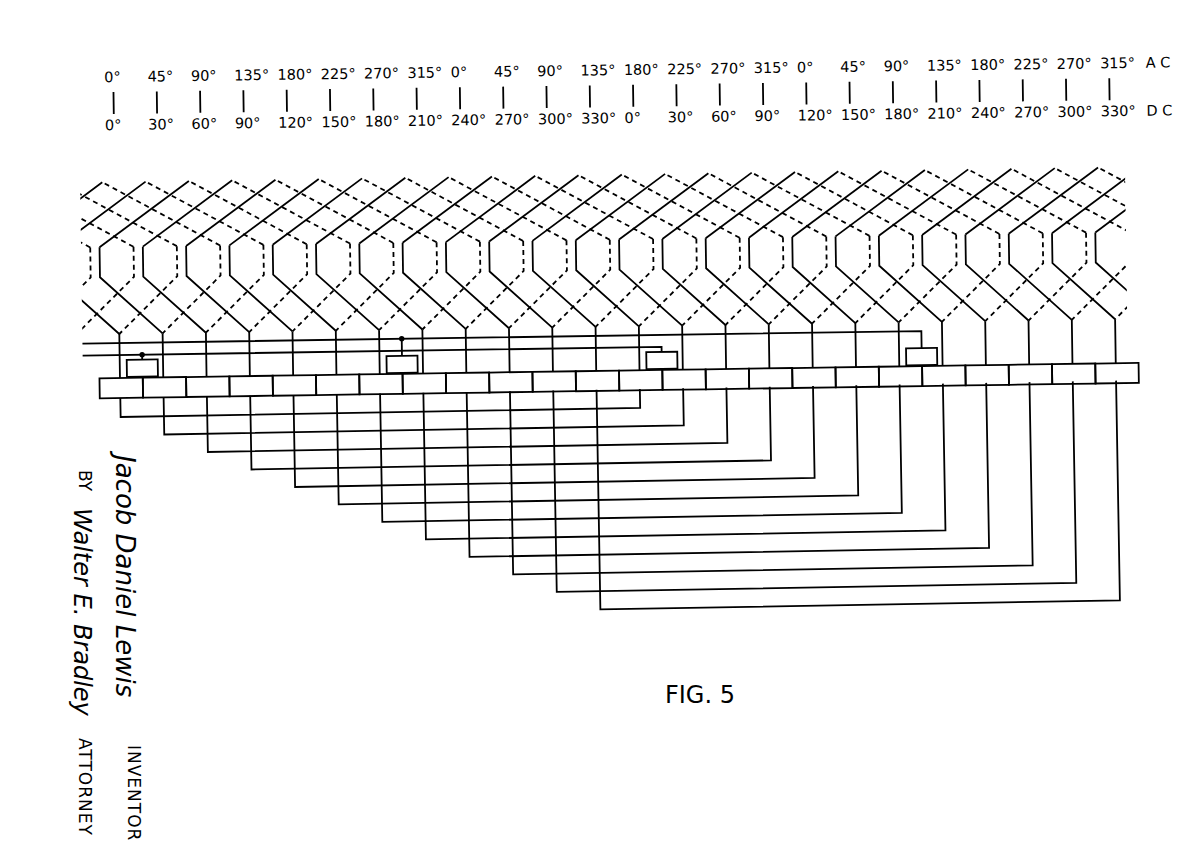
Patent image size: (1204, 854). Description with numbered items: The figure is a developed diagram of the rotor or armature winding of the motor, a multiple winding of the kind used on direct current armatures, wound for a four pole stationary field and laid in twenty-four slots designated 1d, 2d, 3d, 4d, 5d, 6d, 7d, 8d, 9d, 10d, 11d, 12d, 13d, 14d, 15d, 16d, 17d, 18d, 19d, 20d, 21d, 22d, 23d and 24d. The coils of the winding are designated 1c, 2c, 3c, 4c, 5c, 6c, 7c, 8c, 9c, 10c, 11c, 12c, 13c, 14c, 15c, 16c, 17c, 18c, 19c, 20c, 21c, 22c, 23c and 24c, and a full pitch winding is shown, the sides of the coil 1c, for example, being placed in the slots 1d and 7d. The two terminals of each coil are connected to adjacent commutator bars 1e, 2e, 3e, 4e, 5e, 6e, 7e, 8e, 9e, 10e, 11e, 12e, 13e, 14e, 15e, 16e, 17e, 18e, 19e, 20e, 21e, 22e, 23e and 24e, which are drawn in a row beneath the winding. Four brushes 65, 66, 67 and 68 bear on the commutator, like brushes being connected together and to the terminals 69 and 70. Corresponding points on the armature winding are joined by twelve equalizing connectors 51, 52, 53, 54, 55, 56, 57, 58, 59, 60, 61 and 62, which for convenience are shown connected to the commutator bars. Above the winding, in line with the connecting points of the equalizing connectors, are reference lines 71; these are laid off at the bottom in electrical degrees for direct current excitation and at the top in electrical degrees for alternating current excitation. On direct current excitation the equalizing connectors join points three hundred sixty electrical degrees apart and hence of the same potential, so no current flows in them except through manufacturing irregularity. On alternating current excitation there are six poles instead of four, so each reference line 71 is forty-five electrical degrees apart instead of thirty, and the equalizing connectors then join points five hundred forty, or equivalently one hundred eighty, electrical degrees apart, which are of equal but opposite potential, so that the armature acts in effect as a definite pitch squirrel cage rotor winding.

The armature coil 1c is at (246, 204).
The armature coil 2c is at (289, 203).
The armature coil 3c is at (332, 202).
The armature coil 4c is at (375, 202).
The armature coil 5c is at (419, 201).
The armature coil 6c is at (462, 200).
The armature coil 7c is at (505, 200).
The armature coil 8c is at (549, 199).
The armature coil 9c is at (592, 198).
The armature coil 10c is at (635, 198).
The armature coil 11c is at (679, 197).
The armature coil 12c is at (722, 197).
The armature coil 13c is at (765, 196).
The armature coil 14c is at (808, 195).
The armature coil 15c is at (852, 195).
The armature coil 16c is at (895, 194).
The armature coil 17c is at (938, 193).
The armature coil 18c is at (982, 193).
The armature coil 19c is at (1025, 192).
The armature coil 20c is at (548, 200).
The armature coil 21c is at (592, 199).
The armature coil 22c is at (622, 198).
The armature coil 23c is at (665, 197).
The armature coil 24c is at (202, 204).
The armature slot 1d is at (119, 290).
The armature slot 2d is at (162, 290).
The armature slot 3d is at (205, 289).
The armature slot 4d is at (249, 288).
The armature slot 5d is at (292, 288).
The armature slot 6d is at (335, 287).
The armature slot 7d is at (379, 287).
The armature slot 8d is at (422, 286).
The armature slot 9d is at (465, 285).
The armature slot 10d is at (508, 285).
The armature slot 11d is at (552, 284).
The armature slot 12d is at (595, 283).
The armature slot 13d is at (638, 283).
The armature slot 14d is at (682, 282).
The armature slot 15d is at (725, 281).
The armature slot 16d is at (768, 281).
The armature slot 17d is at (811, 280).
The armature slot 18d is at (855, 279).
The armature slot 19d is at (898, 279).
The armature slot 20d is at (941, 278).
The armature slot 21d is at (985, 278).
The armature slot 22d is at (1028, 277).
The armature slot 23d is at (1071, 276).
The armature slot 24d is at (1115, 276).
The commutator bar 1e is at (121, 388).
The commutator bar 2e is at (165, 387).
The commutator bar 3e is at (208, 386).
The commutator bar 4e is at (251, 386).
The commutator bar 5e is at (295, 385).
The commutator bar 6e is at (338, 384).
The commutator bar 7e is at (381, 384).
The commutator bar 8e is at (425, 383).
The commutator bar 9e is at (468, 383).
The commutator bar 10e is at (511, 382).
The commutator bar 11e is at (554, 381).
The commutator bar 12e is at (598, 381).
The commutator bar 13e is at (641, 380).
The commutator bar 14e is at (684, 379).
The commutator bar 15e is at (728, 379).
The commutator bar 16e is at (771, 378).
The commutator bar 17e is at (814, 377).
The commutator bar 18e is at (857, 377).
The commutator bar 19e is at (901, 376).
The commutator bar 20e is at (944, 375).
The commutator bar 21e is at (987, 375).
The commutator bar 22e is at (1031, 374).
The commutator bar 23e is at (1074, 374).
The commutator bar 24e is at (1117, 373).
The equalizing connector 51 is at (147, 418).
The equalizing connector 52 is at (190, 436).
The equalizing connector 53 is at (234, 454).
The equalizing connector 54 is at (277, 473).
The equalizing connector 55 is at (320, 491).
The equalizing connector 56 is at (364, 509).
The equalizing connector 57 is at (407, 528).
The equalizing connector 58 is at (450, 546).
The equalizing connector 59 is at (493, 564).
The equalizing connector 60 is at (537, 582).
The equalizing connector 61 is at (580, 600).
The equalizing connector 62 is at (623, 619).
The brush 65 is at (142, 365).
The brush 66 is at (402, 355).
The brush 67 is at (661, 360).
The brush 68 is at (921, 356).
The terminal 69 is at (108, 343).
The terminal 70 is at (107, 357).
The reference lines 71 is at (113, 98).